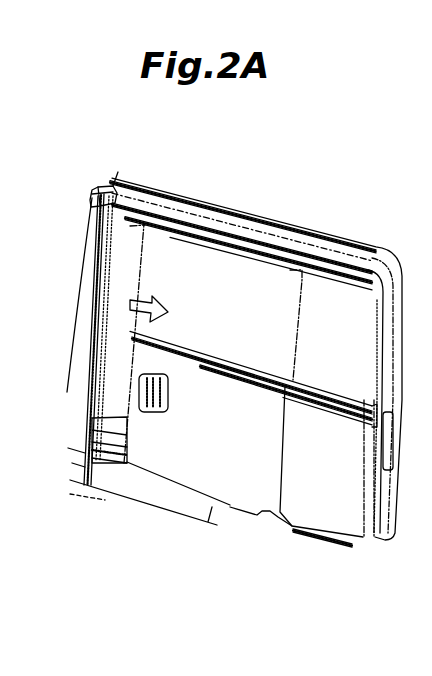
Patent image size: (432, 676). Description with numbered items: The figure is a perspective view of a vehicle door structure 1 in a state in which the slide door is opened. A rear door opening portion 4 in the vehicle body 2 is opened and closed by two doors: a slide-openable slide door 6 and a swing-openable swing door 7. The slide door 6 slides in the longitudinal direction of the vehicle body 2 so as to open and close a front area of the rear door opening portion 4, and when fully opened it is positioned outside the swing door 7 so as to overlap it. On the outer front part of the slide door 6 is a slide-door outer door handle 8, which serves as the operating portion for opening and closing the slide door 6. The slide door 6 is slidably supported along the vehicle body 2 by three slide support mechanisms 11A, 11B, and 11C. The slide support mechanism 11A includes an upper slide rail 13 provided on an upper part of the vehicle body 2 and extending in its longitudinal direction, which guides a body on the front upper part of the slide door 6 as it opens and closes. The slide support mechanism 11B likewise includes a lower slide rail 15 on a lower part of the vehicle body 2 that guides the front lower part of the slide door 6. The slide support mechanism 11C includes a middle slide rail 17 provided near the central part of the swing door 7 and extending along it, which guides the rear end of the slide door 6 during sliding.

The vehicle door structure 1 is at (337, 258).
The vehicle body 2 is at (300, 242).
The rear door opening portion 4 is at (118, 273).
The slide door 6 is at (253, 253).
The swing door 7 is at (367, 287).
The slide-door outer door handle 8 is at (168, 395).
The slide support mechanism 11A is at (155, 208).
The slide support mechanism 11B is at (120, 463).
The slide support mechanism 11C is at (302, 407).
The upper slide rail 13 is at (132, 218).
The lower slide rail 15 is at (108, 448).
The middle slide rail 17 is at (341, 415).